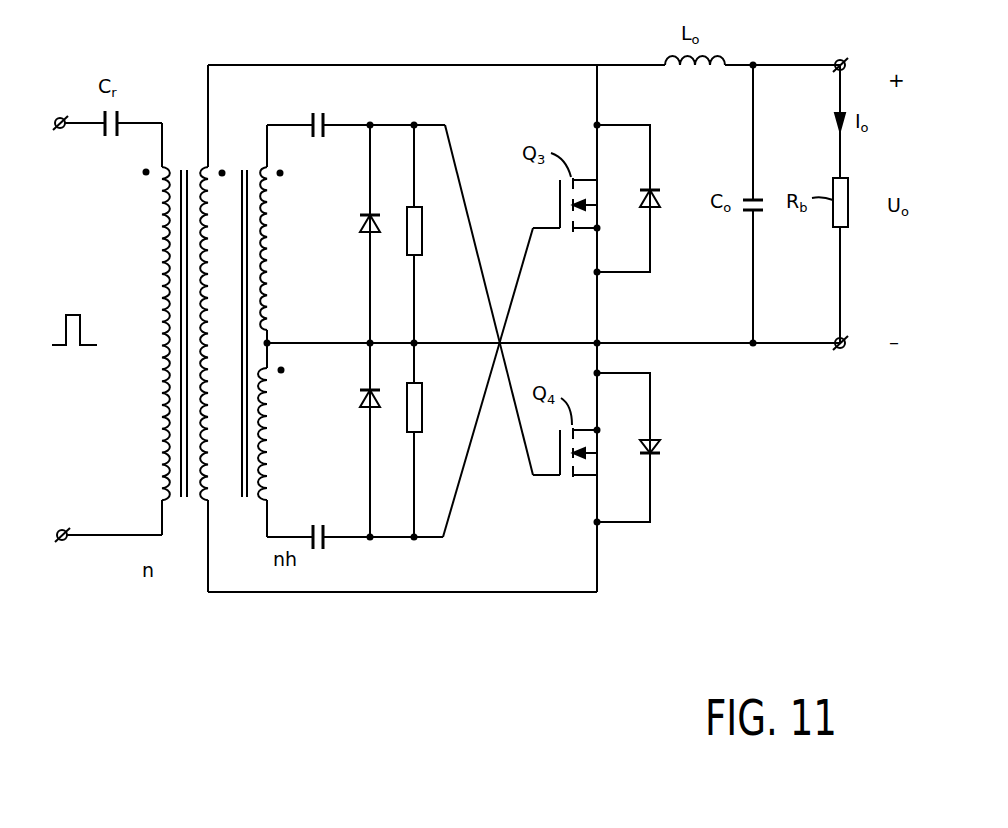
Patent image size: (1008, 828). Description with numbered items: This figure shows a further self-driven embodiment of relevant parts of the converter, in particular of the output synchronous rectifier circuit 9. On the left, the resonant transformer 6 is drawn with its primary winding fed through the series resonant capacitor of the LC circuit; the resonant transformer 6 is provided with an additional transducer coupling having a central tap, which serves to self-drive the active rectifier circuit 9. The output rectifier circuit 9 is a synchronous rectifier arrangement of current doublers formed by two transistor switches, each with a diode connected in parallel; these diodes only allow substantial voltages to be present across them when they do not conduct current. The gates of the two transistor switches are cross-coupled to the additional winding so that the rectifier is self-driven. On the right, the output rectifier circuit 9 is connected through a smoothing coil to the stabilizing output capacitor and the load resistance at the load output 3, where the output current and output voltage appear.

The load output 3 is at (840, 58).
The resonant transformer 6 is at (183, 110).
The output rectifier circuit 9 is at (412, 92).